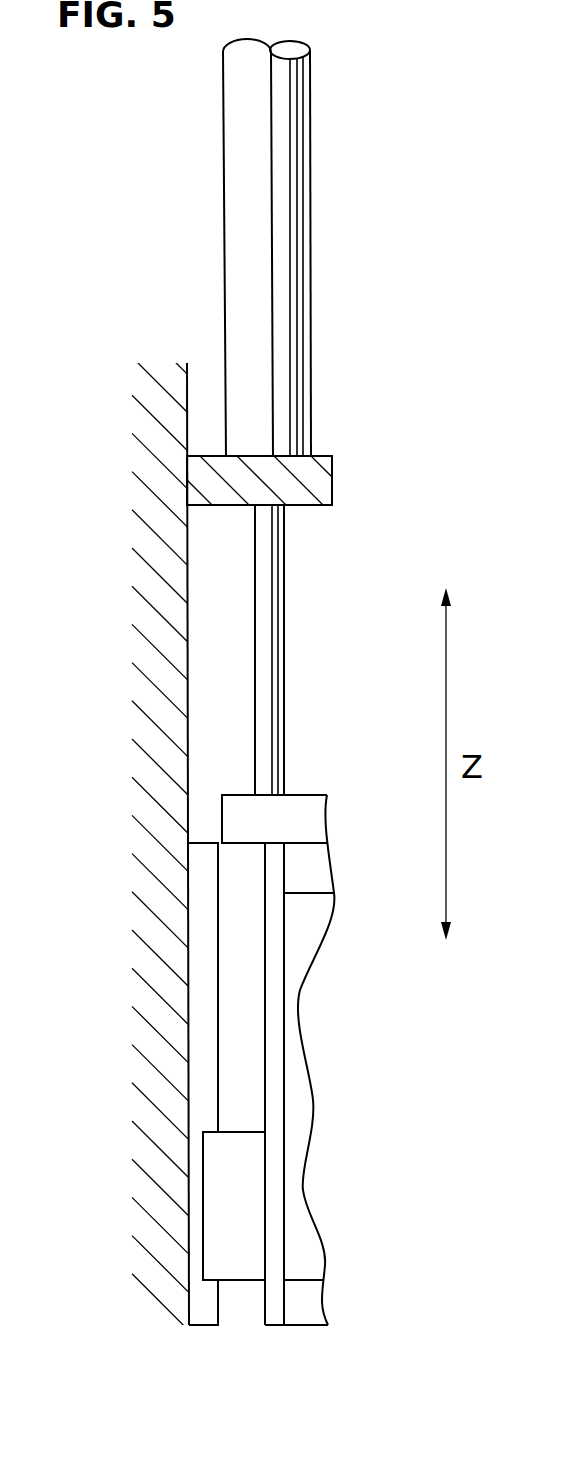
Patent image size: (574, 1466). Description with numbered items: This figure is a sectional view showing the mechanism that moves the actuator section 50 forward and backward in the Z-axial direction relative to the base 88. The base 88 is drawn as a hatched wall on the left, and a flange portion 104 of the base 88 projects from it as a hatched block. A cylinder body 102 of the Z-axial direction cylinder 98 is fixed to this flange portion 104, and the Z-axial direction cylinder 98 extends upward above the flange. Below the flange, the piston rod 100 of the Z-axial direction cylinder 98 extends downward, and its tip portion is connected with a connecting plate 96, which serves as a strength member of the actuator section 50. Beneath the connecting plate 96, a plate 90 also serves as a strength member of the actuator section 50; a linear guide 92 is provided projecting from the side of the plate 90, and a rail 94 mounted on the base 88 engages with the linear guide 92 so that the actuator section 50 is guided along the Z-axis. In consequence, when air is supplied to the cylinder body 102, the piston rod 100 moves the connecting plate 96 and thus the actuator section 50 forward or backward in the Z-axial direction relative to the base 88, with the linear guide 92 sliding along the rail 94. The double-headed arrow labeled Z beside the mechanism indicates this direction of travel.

The actuator section 50 is at (250, 1107).
The base 88 is at (163, 424).
The plate 90 is at (273, 1043).
The linear guide 92 is at (249, 1280).
The rail 94 is at (204, 1325).
The connecting plate 96 is at (300, 827).
The Z-axial direction cylinder 98 is at (328, 206).
The piston rod 100 is at (270, 595).
The cylinder body 102 is at (292, 338).
The flange portion 104 is at (312, 486).